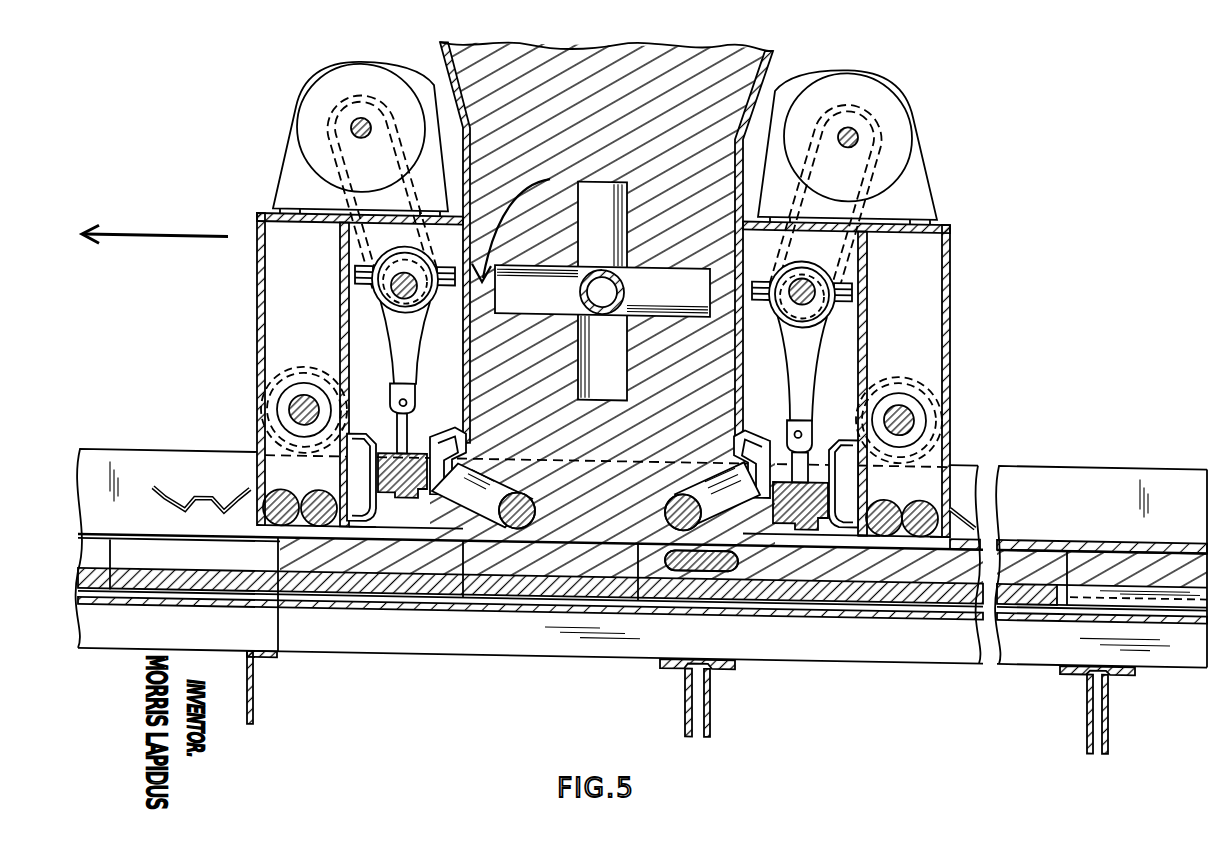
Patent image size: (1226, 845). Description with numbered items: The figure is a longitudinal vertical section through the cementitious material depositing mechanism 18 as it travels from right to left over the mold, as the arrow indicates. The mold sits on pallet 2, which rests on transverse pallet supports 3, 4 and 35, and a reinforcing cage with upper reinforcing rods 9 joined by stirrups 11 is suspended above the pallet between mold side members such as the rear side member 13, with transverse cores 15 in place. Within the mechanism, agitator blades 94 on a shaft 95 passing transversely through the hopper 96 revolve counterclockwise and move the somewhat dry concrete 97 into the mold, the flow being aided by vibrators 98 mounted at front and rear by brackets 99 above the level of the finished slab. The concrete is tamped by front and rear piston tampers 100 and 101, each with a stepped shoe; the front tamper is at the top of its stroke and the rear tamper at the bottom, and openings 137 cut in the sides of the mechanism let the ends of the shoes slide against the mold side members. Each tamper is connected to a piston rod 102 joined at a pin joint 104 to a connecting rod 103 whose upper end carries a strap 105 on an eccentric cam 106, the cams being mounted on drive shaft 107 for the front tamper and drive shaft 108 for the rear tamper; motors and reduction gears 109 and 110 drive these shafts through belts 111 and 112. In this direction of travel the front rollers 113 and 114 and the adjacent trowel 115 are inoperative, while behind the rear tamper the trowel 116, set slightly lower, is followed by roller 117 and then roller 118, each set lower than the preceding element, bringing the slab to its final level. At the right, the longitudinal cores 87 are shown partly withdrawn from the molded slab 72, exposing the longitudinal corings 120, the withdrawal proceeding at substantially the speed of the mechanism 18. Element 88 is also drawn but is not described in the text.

The pallet 2 is at (585, 658).
The pallet support 3 is at (254, 728).
The pallet support 4 is at (1087, 722).
The upper reinforcing rod 9 is at (140, 543).
The stirrup 11 is at (108, 561).
The mold side member 13 is at (100, 458).
The transverse core 15 is at (708, 569).
The material depositing mechanism 18 is at (257, 299).
The pallet support 35 is at (712, 720).
The molded slab 72 is at (1160, 543).
The longitudinal core 87 is at (441, 498).
The spring plate 88 is at (170, 502).
The agitator blade 94 is at (700, 133).
The shaft 95 is at (622, 291).
The hopper 96 is at (771, 62).
The concrete 97 is at (693, 88).
The vibrator 98 is at (518, 533).
The bracket 99 is at (497, 530).
The front piston tamper 100 is at (410, 545).
The rear piston tamper 101 is at (805, 535).
The piston rod 102 is at (408, 433).
The connecting rod 103 is at (426, 364).
The pin joint 104 is at (407, 405).
The strap 105 is at (382, 249).
The eccentric cam 106 is at (393, 283).
The drive shaft 107 is at (380, 263).
The drive shaft 108 is at (823, 284).
The motor and reduction gear 109 is at (298, 113).
The motor and reduction gear 110 is at (913, 113).
The belt 111 is at (330, 162).
The belt 112 is at (876, 167).
The roller 113 is at (278, 660).
The roller 114 is at (312, 532).
The trowel 115 is at (362, 526).
The trowel 116 is at (866, 534).
The roller 117 is at (920, 534).
The roller 118 is at (955, 534).
The longitudinal coring 120 is at (1085, 597).
The opening 137 is at (625, 469).